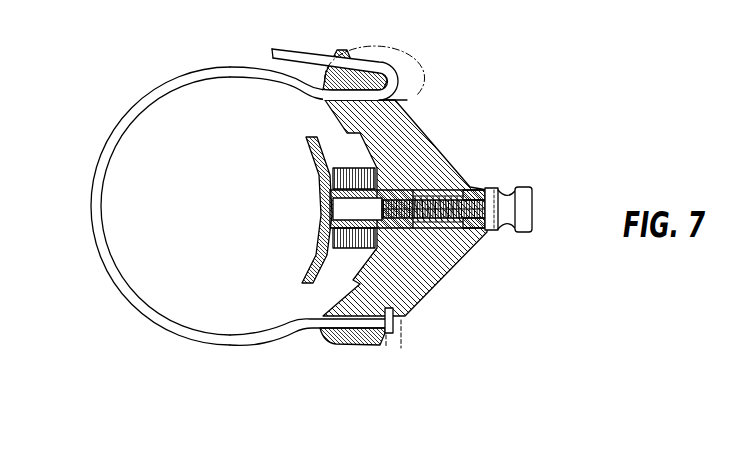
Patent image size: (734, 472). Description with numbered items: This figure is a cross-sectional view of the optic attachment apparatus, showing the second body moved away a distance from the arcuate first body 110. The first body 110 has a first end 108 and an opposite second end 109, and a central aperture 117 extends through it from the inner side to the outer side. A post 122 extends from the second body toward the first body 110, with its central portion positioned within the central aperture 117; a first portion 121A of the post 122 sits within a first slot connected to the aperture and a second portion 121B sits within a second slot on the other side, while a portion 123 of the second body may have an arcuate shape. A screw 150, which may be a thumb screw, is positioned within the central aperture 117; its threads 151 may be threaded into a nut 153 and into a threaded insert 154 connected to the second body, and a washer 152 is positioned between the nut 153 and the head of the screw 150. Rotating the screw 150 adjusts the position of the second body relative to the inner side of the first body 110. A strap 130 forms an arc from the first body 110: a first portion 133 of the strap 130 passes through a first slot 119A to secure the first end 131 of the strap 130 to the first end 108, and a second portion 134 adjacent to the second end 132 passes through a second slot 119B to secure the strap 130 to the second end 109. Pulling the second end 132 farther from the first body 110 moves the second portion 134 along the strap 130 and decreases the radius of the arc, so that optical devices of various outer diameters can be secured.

The first end 108 is at (333, 335).
The second end 109 is at (348, 65).
The first body 110 is at (420, 117).
The central aperture 117 is at (387, 228).
The first slot 119A is at (338, 309).
The second slot 119B is at (323, 101).
The first portion of the post 121A is at (331, 180).
The second portion of the post 121B is at (323, 240).
The post 122 is at (325, 160).
The portion of the second body 123 is at (335, 203).
The strap 130 is at (107, 140).
The first end of the strap 131 is at (397, 347).
The second end of the strap 132 is at (263, 47).
The first portion of the strap 133 is at (408, 323).
The second portion of the strap 134 is at (412, 53).
The screw 150 is at (522, 188).
The threads 151 is at (440, 200).
The washer 152 is at (493, 230).
The nut 153 is at (475, 228).
The threaded insert 154 is at (407, 192).